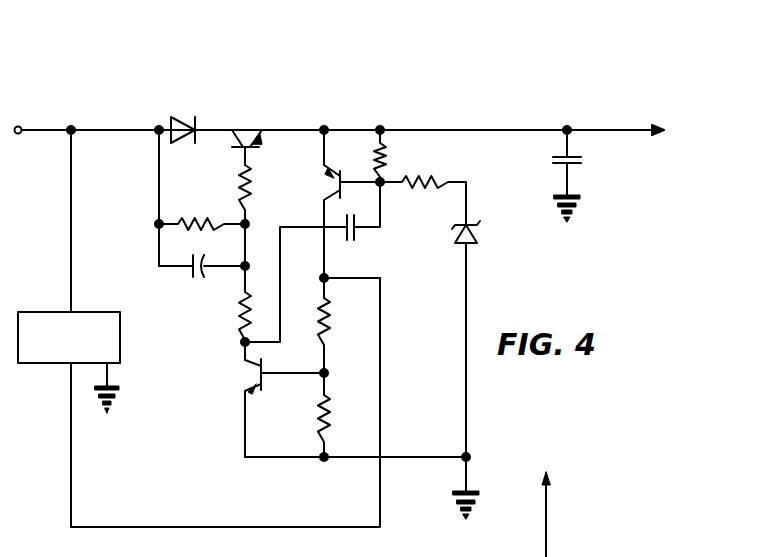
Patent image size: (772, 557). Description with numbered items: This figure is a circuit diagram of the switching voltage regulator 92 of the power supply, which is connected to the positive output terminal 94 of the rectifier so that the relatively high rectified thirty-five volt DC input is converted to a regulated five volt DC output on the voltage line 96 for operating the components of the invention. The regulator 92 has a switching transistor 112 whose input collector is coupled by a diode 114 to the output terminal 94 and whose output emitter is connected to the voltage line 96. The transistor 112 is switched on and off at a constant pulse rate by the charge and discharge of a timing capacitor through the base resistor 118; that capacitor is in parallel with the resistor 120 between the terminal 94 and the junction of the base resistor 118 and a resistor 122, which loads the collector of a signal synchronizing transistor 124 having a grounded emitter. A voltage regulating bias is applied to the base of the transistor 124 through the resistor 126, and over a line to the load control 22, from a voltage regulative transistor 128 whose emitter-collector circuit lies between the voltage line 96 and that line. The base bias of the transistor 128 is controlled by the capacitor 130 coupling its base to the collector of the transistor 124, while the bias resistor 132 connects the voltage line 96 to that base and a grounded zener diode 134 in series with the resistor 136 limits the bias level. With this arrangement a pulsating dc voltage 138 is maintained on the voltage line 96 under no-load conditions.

The load control 22 is at (121, 344).
The switching voltage regulator 92 is at (364, 106).
The positive output terminal 94 is at (21, 127).
The voltage line 96 is at (408, 130).
The switching transistor 112 is at (241, 128).
The diode 114 is at (183, 119).
The base resistor 118 is at (252, 184).
The resistor 120 is at (186, 222).
The resistor 122 is at (240, 326).
The signal synchronizing transistor 124 is at (247, 369).
The resistor 126 is at (331, 325).
The voltage regulative transistor 128 is at (337, 186).
The capacitor 130 is at (357, 229).
The bias resistor 132 is at (388, 161).
The zener diode 134 is at (482, 236).
The resistor 136 is at (420, 186).
The pulsating dc voltage 138 is at (632, 514).